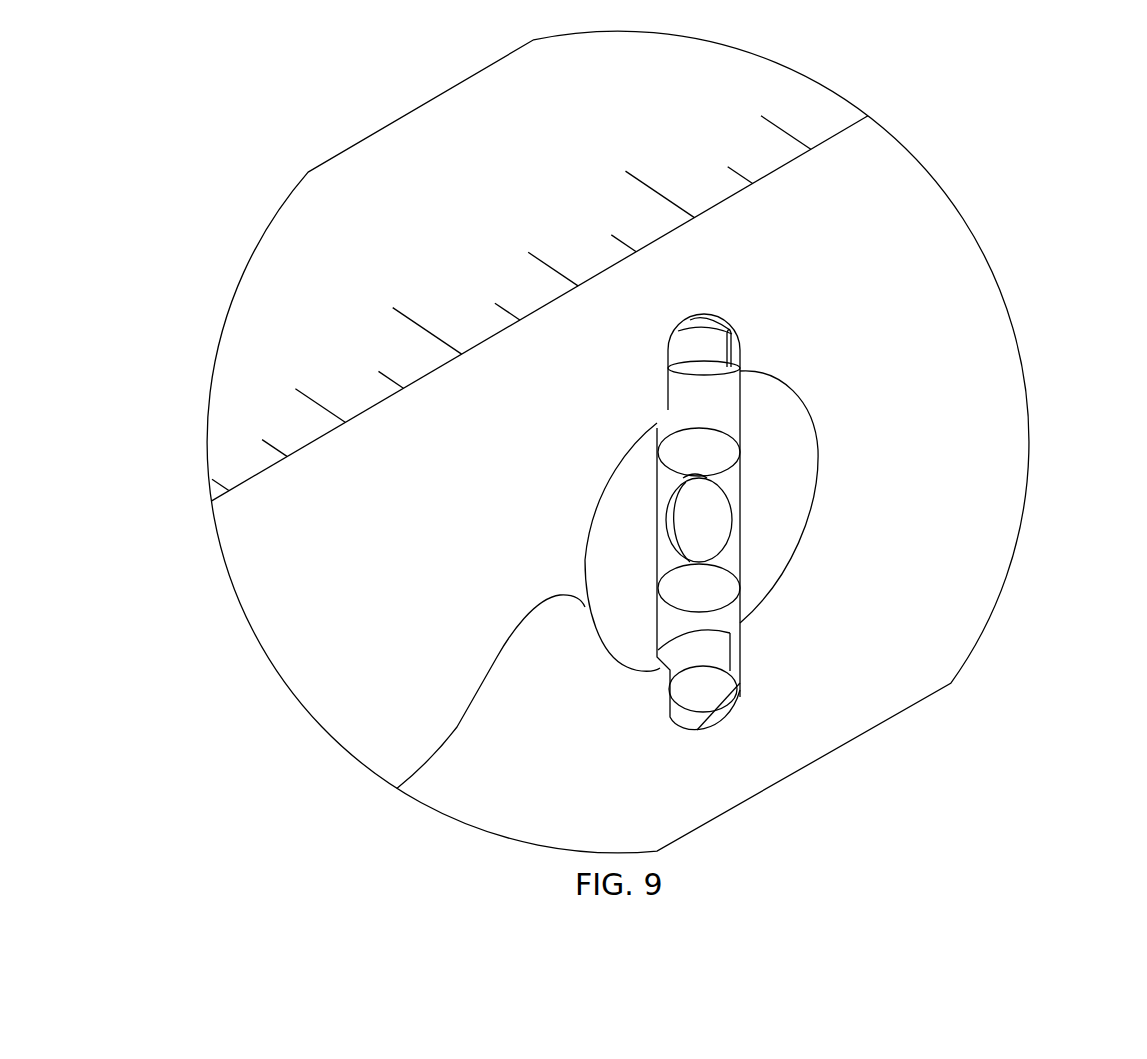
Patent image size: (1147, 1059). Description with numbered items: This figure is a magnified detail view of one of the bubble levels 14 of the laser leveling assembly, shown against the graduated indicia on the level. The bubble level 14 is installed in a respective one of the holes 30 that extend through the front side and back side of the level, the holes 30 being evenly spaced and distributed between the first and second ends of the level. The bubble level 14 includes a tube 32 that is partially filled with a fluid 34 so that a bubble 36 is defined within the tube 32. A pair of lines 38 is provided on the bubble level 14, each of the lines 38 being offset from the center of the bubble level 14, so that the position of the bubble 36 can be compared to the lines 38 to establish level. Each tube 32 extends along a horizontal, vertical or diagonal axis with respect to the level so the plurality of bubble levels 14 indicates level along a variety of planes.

The bubble level 14 is at (921, 271).
The hole 30 is at (397, 788).
The tube 32 is at (715, 388).
The fluid 34 is at (672, 406).
The bubble 36 is at (717, 518).
The lines 38 is at (725, 470).